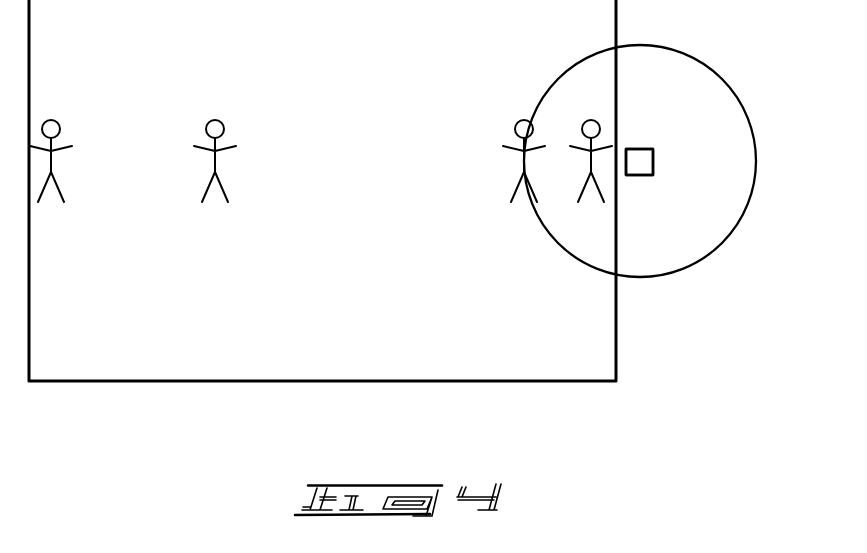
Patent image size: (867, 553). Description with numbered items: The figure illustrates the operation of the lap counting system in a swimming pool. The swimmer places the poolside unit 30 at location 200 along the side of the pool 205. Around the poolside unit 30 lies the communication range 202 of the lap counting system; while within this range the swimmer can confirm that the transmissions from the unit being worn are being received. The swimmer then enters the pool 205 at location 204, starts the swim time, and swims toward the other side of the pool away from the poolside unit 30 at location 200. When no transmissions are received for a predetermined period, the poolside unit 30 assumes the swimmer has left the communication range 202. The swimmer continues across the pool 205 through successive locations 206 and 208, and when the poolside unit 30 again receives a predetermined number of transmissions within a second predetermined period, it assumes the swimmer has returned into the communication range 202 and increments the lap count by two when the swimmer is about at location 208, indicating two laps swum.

The location 200 is at (642, 148).
The poolside unit 30 is at (638, 177).
The communication range 202 is at (680, 272).
The location 204 is at (583, 122).
The pool 205 is at (547, 383).
The location 206 is at (224, 122).
The location 208 is at (61, 122).